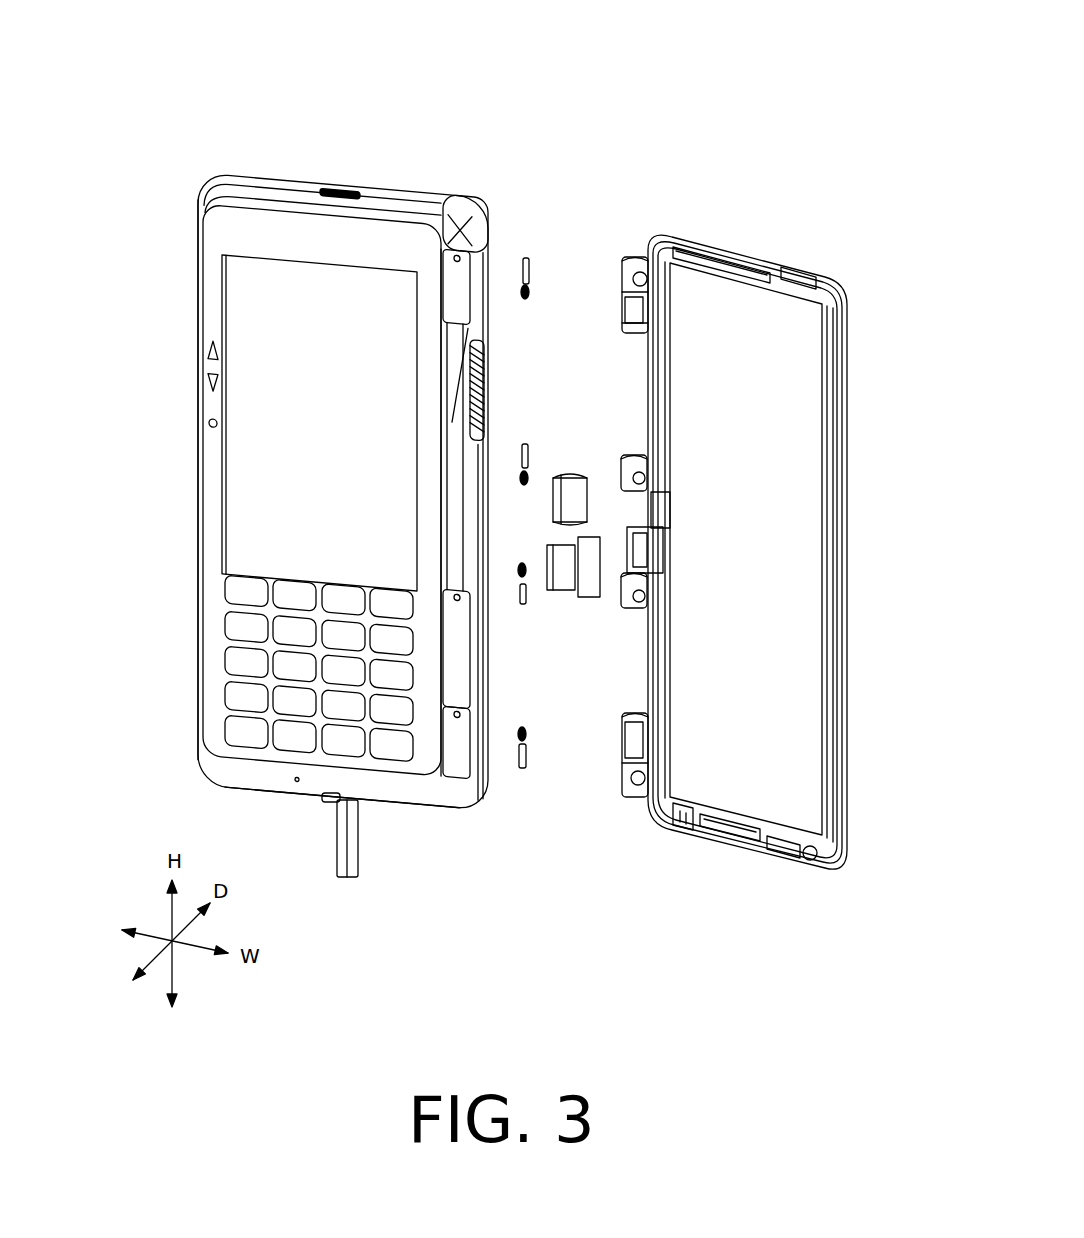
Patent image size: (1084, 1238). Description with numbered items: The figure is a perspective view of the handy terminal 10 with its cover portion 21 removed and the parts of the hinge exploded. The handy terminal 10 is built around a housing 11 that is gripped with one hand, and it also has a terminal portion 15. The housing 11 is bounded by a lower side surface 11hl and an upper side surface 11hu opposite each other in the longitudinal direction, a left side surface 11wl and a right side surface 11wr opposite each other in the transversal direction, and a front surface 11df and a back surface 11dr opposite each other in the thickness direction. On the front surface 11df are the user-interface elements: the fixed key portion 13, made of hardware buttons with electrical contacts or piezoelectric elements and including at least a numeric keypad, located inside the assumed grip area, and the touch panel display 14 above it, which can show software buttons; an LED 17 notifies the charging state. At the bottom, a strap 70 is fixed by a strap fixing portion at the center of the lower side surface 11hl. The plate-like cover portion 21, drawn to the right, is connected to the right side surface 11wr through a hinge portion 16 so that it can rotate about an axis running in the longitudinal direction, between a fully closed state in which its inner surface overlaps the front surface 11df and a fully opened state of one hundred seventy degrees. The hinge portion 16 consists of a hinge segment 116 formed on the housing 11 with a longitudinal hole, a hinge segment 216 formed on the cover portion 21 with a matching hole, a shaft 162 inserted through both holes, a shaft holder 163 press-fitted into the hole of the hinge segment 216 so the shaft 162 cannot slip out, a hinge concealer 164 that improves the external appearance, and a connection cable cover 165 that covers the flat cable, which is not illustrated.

The handy terminal 10 is at (157, 158).
The housing 11 is at (280, 185).
The upper side surface 11hu is at (370, 190).
The back surface 11dr is at (404, 190).
The left side surface 11wl is at (197, 392).
The front surface 11df is at (213, 530).
The lower side surface 11hl is at (281, 803).
The right side surface 11wr is at (500, 655).
The fixed key portion 13 is at (250, 658).
The touch panel display 14 is at (292, 458).
The terminal portion 15 is at (500, 388).
The hinge portion 16 is at (750, 183).
The LED 17 is at (325, 803).
The cover portion 21 is at (785, 245).
The strap 70 is at (358, 833).
The hinge segment 116 is at (462, 252).
The shaft 162 is at (528, 256).
The shaft holder 163 is at (531, 297).
The hinge concealer 164 is at (567, 492).
The connection cable cover 165 is at (565, 583).
The hinge segment 216 is at (630, 255).